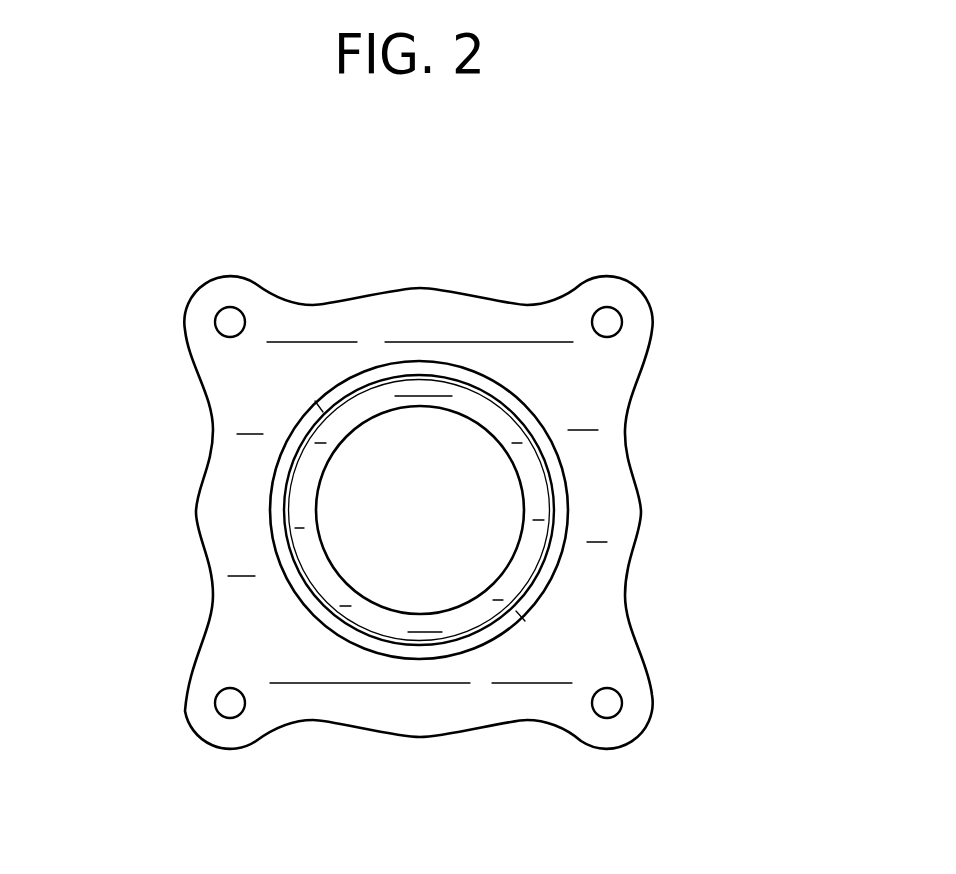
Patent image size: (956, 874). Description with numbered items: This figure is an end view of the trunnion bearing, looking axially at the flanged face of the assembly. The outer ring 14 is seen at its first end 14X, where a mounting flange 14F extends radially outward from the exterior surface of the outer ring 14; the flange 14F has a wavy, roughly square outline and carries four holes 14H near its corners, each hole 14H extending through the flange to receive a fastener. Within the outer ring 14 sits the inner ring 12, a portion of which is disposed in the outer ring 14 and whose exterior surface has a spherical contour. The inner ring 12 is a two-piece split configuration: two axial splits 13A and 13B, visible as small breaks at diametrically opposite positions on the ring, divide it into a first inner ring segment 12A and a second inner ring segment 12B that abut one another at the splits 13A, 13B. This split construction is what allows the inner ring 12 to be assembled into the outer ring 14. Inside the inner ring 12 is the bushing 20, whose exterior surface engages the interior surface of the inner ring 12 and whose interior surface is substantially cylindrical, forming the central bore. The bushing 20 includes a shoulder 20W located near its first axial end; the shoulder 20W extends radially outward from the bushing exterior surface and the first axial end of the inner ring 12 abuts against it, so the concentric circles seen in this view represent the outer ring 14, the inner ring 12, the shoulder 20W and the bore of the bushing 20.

The inner ring 12 is at (683, 220).
The first inner ring segment 12A is at (547, 570).
The second inner ring segment 12B is at (422, 652).
The axial split 13A is at (520, 617).
The axial split 13B is at (320, 404).
The outer ring 14 is at (242, 557).
The mounting flange 14F is at (600, 370).
The holes 14H is at (232, 323).
The first end 14X is at (303, 693).
The bushing 20 is at (440, 398).
The shoulder 20W is at (486, 413).